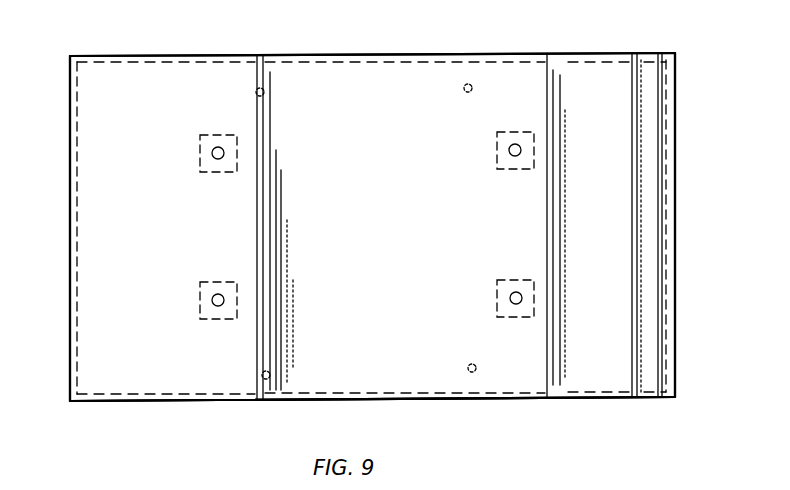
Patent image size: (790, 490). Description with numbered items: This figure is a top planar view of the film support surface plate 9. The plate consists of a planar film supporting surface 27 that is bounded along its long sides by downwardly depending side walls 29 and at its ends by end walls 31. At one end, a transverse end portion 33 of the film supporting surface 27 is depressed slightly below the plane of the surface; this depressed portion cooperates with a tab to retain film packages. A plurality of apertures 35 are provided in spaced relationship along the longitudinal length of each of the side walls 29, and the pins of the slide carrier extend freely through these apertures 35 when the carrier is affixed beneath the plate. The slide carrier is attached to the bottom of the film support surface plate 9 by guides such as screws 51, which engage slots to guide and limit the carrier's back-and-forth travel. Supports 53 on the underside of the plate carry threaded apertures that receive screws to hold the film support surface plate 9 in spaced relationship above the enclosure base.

The film support surface plate 9 is at (505, 398).
The planar film supporting surface 27 is at (321, 382).
The side walls 29 is at (118, 55).
The end walls 31 is at (72, 195).
The transverse end portion 33 is at (648, 72).
The apertures 35 is at (187, 60).
The screws 51 is at (254, 93).
The supports 53 is at (197, 165).